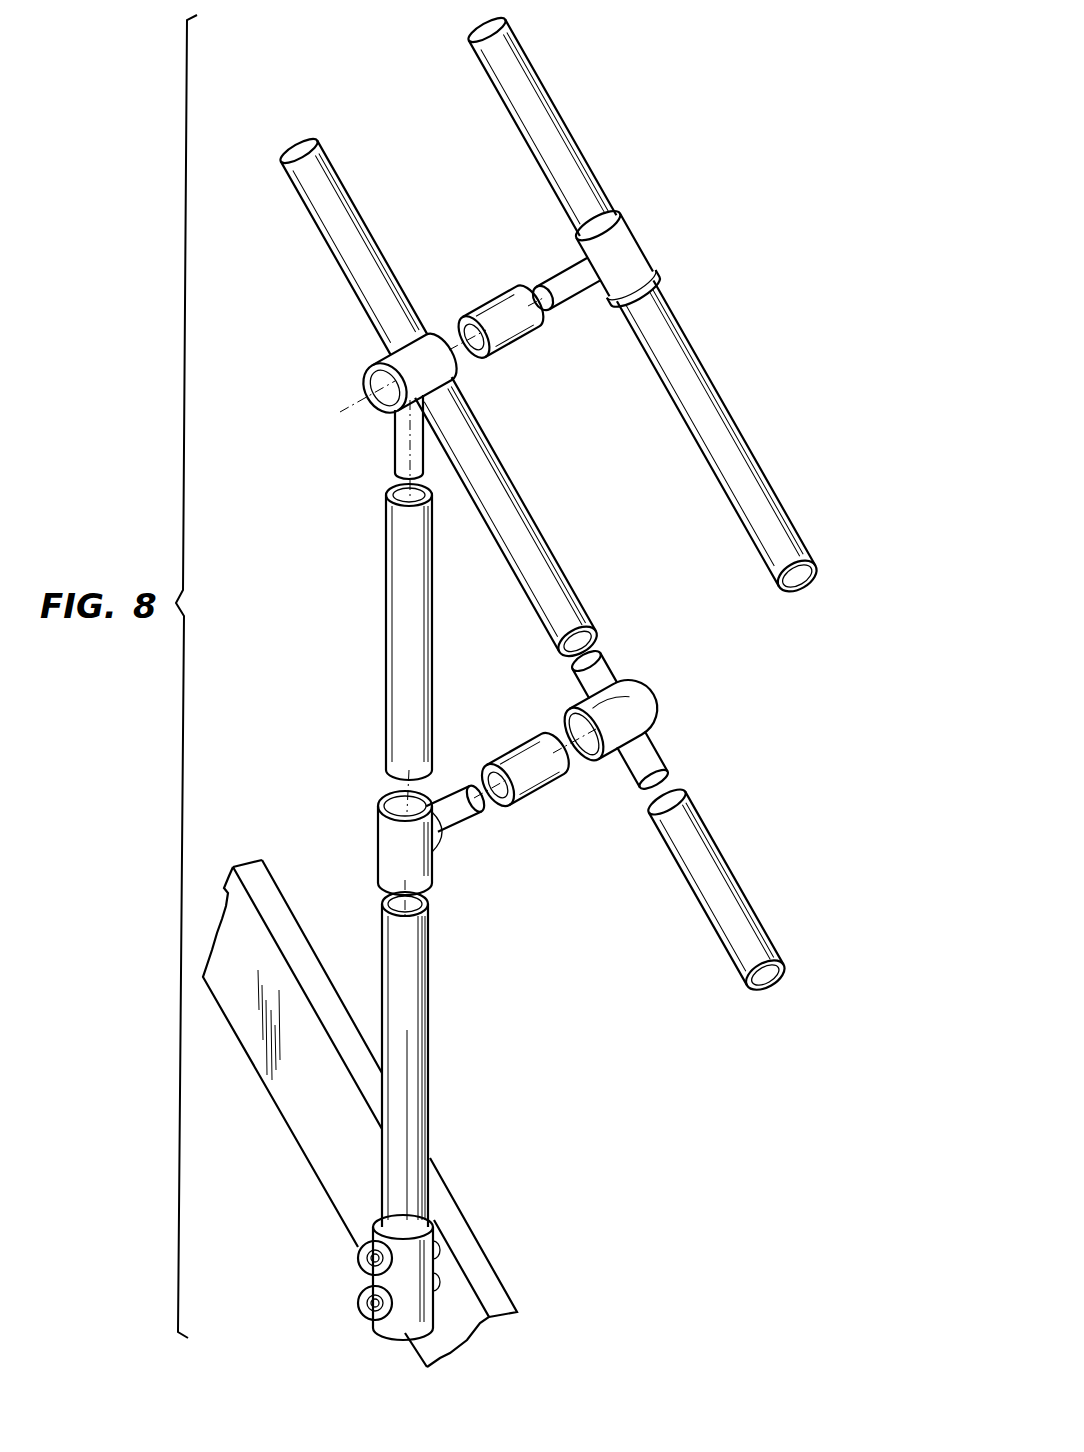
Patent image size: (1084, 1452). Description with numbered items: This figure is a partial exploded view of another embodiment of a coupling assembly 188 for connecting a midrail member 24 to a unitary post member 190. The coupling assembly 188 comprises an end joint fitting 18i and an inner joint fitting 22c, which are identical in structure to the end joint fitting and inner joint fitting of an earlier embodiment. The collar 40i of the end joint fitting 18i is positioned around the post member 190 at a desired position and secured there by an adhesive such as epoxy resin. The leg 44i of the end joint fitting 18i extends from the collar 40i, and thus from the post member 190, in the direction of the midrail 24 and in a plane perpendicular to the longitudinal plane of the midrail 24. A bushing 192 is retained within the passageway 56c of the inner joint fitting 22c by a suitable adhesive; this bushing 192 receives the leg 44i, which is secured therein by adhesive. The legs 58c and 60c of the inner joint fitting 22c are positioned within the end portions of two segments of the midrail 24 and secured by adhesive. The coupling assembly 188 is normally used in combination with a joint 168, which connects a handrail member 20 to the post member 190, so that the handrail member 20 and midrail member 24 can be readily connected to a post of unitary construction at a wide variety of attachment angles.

The handrail member 20 is at (708, 408).
The midrail member 24 is at (535, 560).
The joint 168 is at (478, 271).
The unitary post member 190 is at (400, 628).
The inner joint fitting 22c is at (648, 718).
The leg 58c is at (612, 668).
The leg 60c is at (662, 758).
The passageway 56c is at (584, 734).
The bushing 192 is at (516, 757).
The coupling assembly 188 is at (606, 793).
The end joint fitting 18i is at (429, 816).
The collar 40i is at (400, 846).
The leg 44i is at (468, 792).